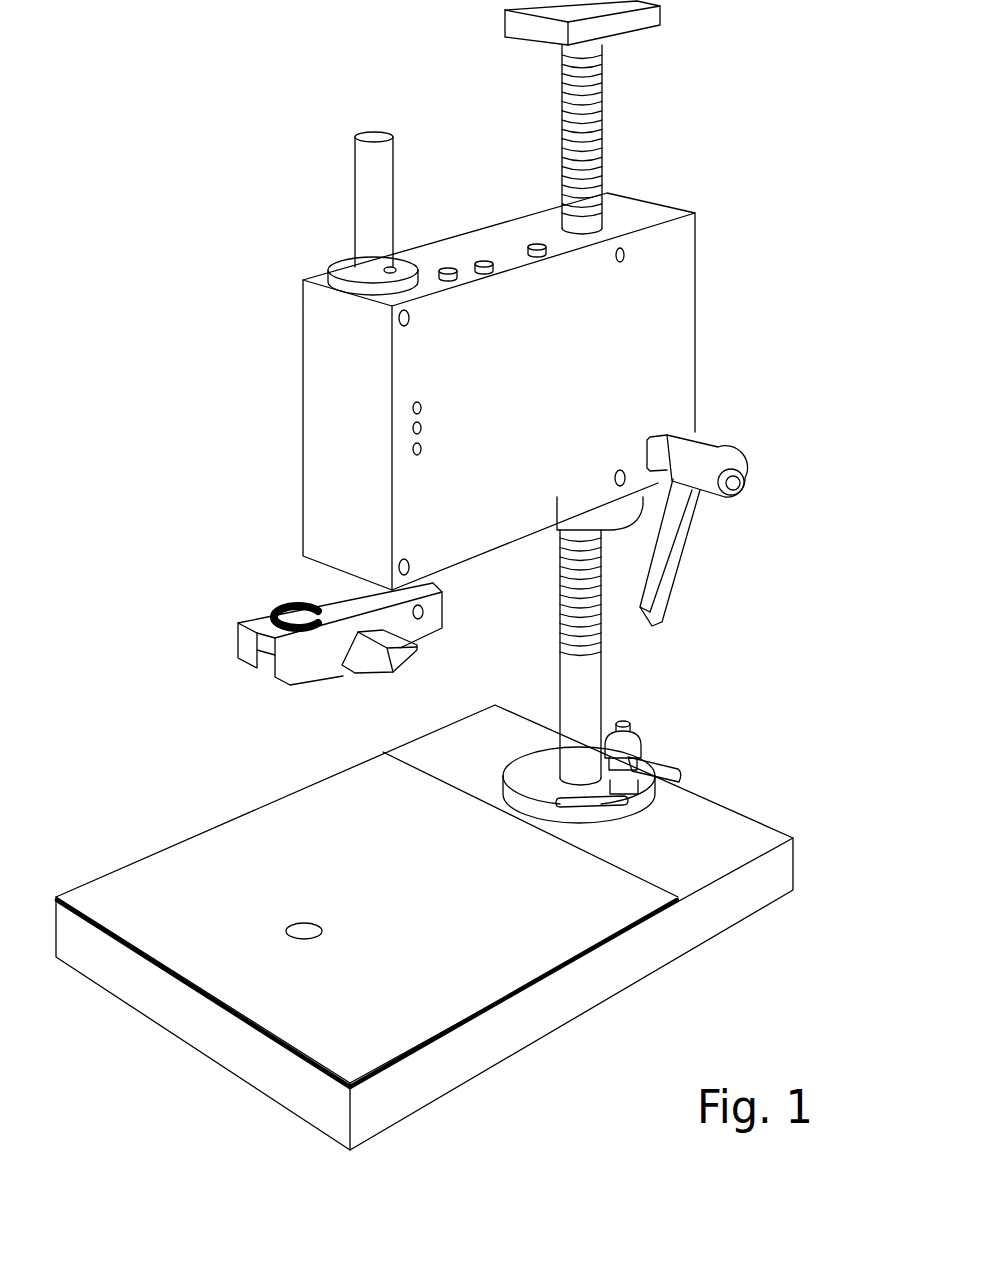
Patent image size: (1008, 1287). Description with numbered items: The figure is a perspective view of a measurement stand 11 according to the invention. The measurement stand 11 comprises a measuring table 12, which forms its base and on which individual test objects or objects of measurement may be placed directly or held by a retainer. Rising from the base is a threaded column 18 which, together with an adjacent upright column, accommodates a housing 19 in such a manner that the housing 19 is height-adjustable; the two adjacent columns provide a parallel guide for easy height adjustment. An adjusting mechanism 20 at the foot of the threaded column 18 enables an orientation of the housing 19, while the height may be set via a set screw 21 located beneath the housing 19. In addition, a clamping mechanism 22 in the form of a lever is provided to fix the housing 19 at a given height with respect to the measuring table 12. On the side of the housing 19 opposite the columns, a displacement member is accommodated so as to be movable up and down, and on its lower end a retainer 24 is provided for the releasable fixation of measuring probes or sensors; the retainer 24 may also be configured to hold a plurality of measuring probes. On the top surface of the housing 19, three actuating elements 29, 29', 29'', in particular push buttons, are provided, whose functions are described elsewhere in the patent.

The measurement stand 11 is at (758, 653).
The measuring table 12 is at (443, 1001).
The threaded column 18 is at (588, 685).
The housing 19 is at (705, 332).
The adjusting mechanism 20 is at (672, 753).
The set screw 21 is at (627, 508).
The clamping mechanism 22 is at (700, 553).
The retainer 24 is at (218, 673).
The actuating element 29 is at (524, 179).
The actuating element 29' is at (427, 208).
The actuating element 29'' is at (469, 195).